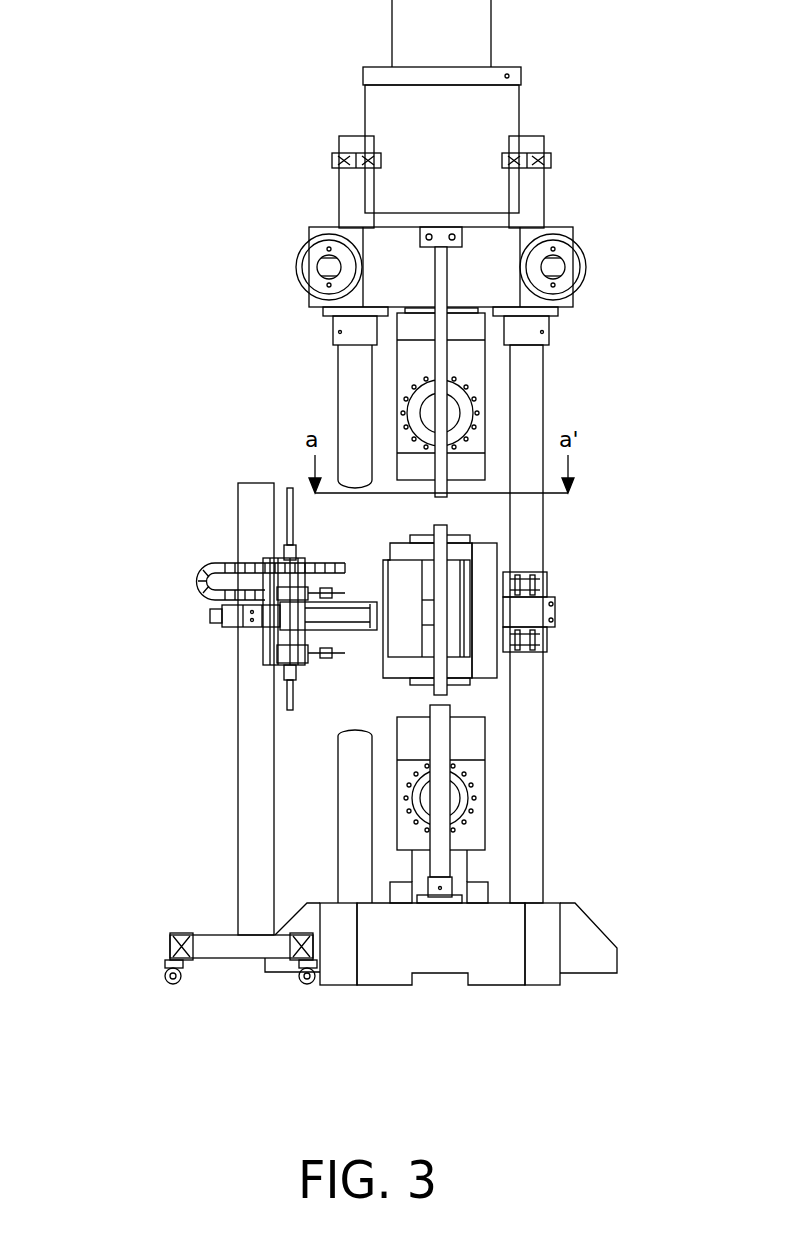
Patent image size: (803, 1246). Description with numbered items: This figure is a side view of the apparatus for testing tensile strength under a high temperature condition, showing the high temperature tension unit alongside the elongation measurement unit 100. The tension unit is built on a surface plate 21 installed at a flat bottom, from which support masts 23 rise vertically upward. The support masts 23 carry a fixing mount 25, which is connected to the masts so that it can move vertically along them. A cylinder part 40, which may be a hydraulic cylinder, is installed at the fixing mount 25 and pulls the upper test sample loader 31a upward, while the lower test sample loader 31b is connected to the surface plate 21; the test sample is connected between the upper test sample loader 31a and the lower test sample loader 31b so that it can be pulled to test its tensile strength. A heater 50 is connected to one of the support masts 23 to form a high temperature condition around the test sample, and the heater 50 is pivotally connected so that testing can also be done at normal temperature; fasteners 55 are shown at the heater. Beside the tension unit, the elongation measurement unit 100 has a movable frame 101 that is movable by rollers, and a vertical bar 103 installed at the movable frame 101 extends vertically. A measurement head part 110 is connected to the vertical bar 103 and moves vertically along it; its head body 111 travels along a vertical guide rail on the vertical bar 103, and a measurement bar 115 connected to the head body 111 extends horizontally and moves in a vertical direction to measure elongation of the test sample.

The elongation measurement unit 100 is at (195, 785).
The movable frame 101 is at (235, 948).
The vertical bar 103 is at (258, 488).
The measurement head part 110 is at (217, 613).
The head body 111 is at (275, 655).
The measurement bar 115 is at (370, 633).
The surface plate 21 is at (513, 937).
The support masts 23 is at (520, 145).
The fixing mount 25 is at (553, 230).
The upper test sample loader 31a is at (475, 372).
The lower test sample loader 31b is at (478, 745).
The cylinder part 40 is at (506, 113).
The heater 50 is at (487, 553).
The clamp fasteners 55 is at (545, 637).